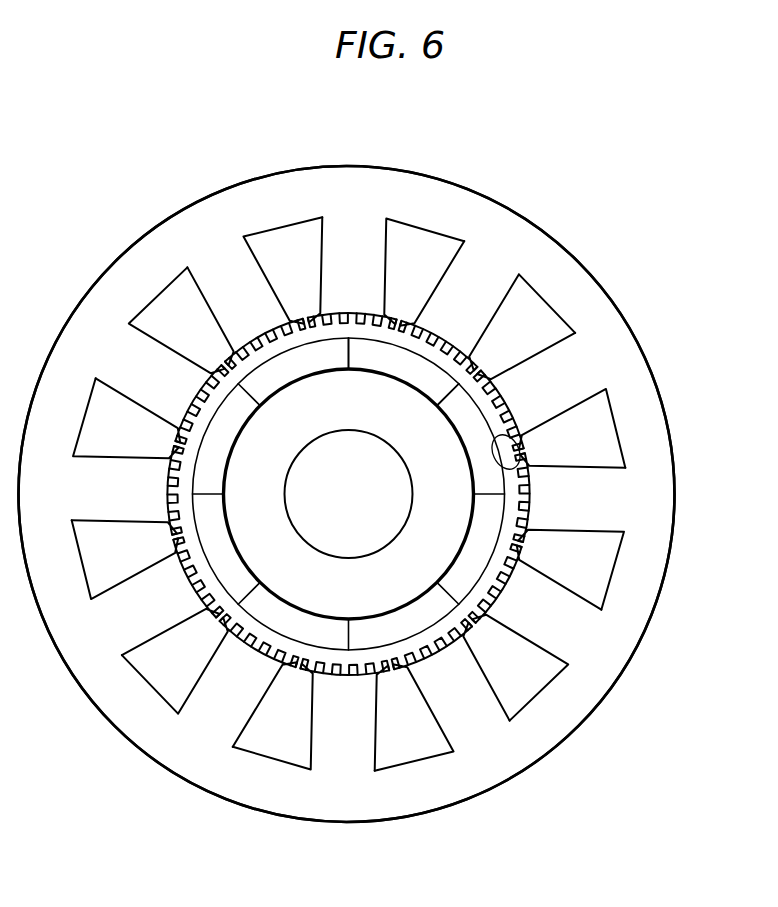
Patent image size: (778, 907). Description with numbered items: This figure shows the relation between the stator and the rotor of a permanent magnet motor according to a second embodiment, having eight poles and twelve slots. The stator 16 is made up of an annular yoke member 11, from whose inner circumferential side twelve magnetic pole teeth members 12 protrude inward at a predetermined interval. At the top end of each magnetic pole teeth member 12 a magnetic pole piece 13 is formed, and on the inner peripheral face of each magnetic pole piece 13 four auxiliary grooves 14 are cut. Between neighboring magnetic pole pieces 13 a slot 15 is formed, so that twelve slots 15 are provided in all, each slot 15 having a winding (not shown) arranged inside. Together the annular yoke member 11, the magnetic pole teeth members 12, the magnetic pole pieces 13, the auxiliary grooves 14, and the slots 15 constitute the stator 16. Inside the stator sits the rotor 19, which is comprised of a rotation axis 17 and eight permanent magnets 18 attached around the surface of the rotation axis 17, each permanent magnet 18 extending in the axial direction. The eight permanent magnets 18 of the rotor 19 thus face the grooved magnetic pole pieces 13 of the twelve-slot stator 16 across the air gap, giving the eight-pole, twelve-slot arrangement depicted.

The annular yoke member 11 is at (555, 265).
The magnetic pole teeth members 12 is at (585, 348).
The magnetic pole pieces 13 is at (513, 415).
The auxiliary grooves 14 is at (520, 495).
The slot 15 is at (520, 453).
The stator 16 is at (723, 236).
The rotation axis 17 is at (410, 572).
The permanent magnets 18 is at (395, 630).
The rotor 19 is at (686, 776).